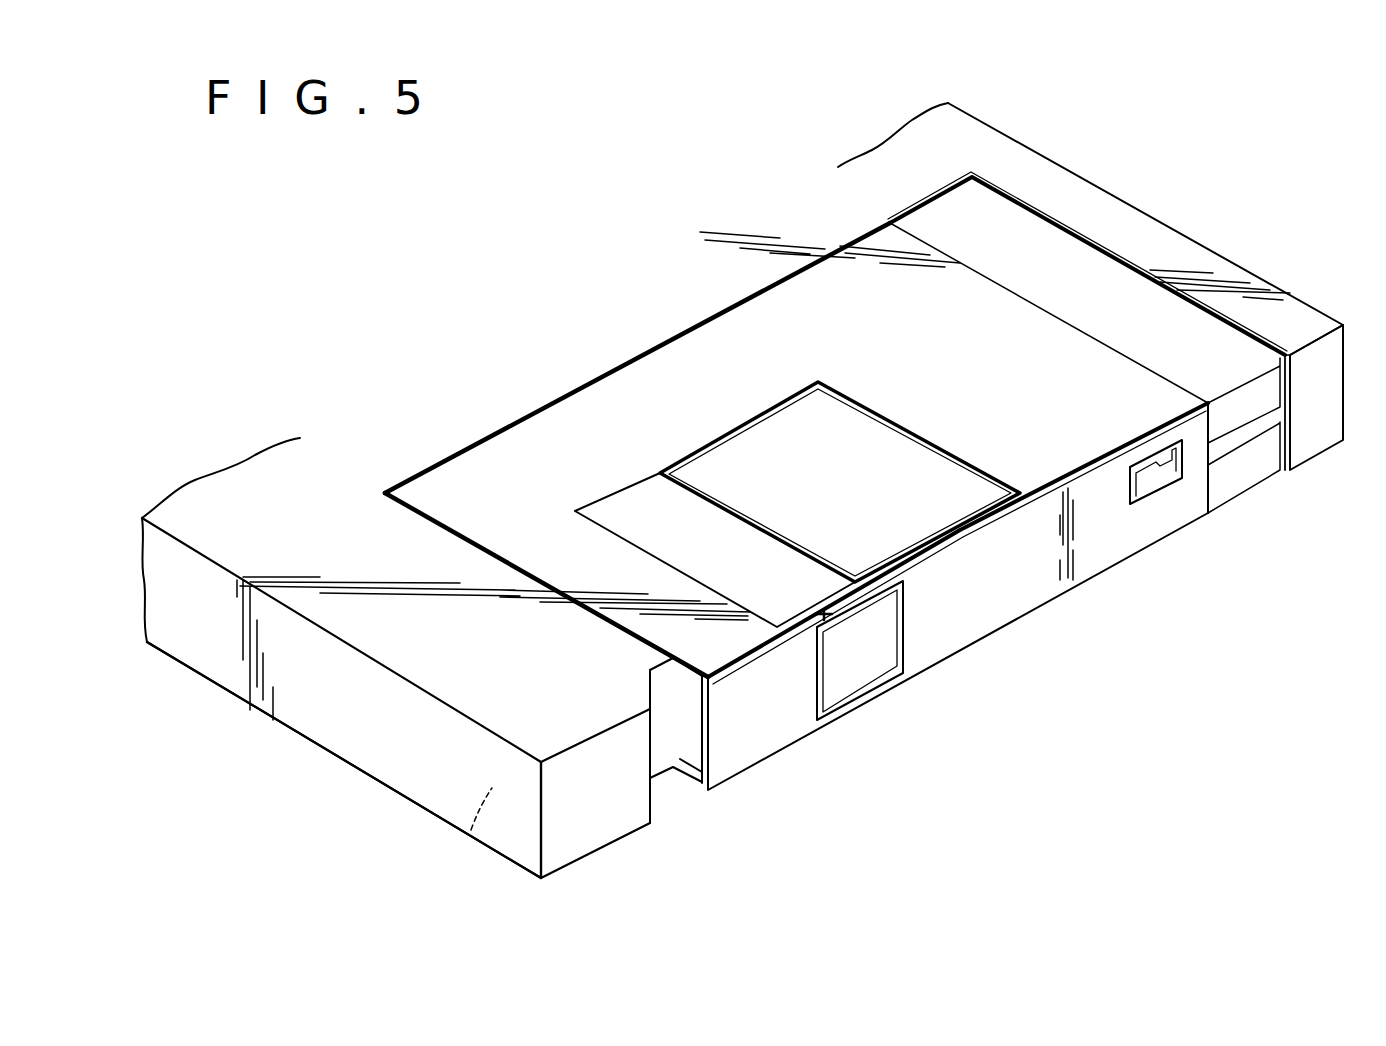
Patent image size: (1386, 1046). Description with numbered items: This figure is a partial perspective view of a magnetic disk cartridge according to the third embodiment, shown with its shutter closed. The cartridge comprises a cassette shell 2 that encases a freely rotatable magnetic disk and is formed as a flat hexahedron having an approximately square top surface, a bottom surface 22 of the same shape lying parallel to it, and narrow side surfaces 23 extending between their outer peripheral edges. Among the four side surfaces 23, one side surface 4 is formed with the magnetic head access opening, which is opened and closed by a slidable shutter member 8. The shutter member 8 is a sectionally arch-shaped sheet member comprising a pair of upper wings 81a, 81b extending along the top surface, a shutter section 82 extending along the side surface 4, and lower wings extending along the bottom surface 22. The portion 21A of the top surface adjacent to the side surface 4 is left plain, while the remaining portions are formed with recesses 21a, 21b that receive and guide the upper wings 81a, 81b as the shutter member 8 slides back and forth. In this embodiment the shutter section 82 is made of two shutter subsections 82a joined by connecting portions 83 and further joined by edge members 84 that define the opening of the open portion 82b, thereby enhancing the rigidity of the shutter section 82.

The cassette shell 2 is at (1020, 172).
The shutter member 8 is at (1020, 320).
The upper wing 81a is at (637, 580).
The upper wing 81b is at (1077, 384).
The connecting portion 83 is at (715, 350).
The portion of top surface 21A is at (855, 450).
The recess 21a is at (625, 518).
The recess 21b is at (1188, 337).
The edge member 84 is at (880, 592).
The shutter section 82 is at (1110, 540).
The shutter subsection 82a is at (985, 607).
The open portion 82b is at (818, 672).
The side surface 4 is at (617, 807).
The bottom surface 22 is at (470, 835).
The side surfaces 23 is at (390, 749).